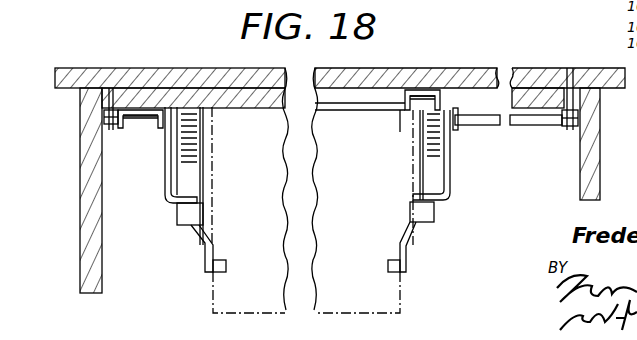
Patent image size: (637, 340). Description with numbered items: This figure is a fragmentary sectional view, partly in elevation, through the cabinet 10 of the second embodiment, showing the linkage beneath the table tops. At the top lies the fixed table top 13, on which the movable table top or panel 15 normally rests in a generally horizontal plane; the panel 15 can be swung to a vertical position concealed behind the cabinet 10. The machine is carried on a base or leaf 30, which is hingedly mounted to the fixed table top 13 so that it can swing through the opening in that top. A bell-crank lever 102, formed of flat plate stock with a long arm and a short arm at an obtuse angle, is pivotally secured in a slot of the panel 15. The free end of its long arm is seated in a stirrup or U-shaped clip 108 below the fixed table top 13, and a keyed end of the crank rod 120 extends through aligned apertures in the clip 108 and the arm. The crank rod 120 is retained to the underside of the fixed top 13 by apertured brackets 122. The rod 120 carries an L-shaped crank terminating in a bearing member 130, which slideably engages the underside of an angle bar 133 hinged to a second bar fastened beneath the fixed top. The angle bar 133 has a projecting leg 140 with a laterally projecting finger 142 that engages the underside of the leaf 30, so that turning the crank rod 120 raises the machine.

The cabinet 10 is at (437, 70).
The fixed table top 13 is at (136, 86).
The movable table top or panel 15 is at (78, 68).
The base or leaf 30 is at (210, 300).
The bell-crank lever 102 is at (108, 98).
The stirrup or U-shaped clip 108 is at (110, 126).
The crank rod 120 is at (480, 126).
The bracket 122 is at (460, 126).
The bearing member 130 is at (186, 204).
The angle bar 133 is at (202, 168).
The projecting leg 140 is at (404, 247).
The laterally projecting finger 142 is at (388, 271).